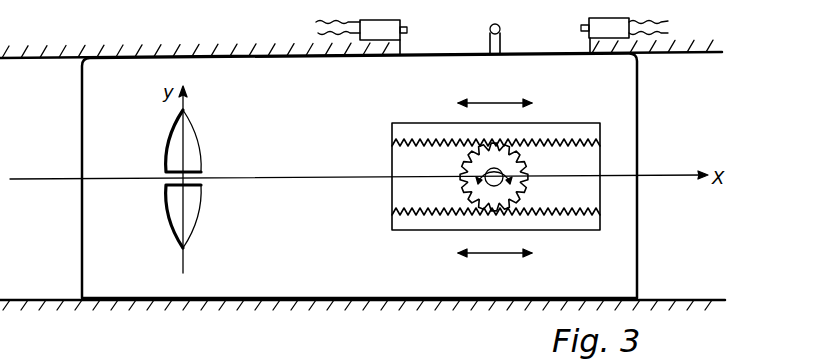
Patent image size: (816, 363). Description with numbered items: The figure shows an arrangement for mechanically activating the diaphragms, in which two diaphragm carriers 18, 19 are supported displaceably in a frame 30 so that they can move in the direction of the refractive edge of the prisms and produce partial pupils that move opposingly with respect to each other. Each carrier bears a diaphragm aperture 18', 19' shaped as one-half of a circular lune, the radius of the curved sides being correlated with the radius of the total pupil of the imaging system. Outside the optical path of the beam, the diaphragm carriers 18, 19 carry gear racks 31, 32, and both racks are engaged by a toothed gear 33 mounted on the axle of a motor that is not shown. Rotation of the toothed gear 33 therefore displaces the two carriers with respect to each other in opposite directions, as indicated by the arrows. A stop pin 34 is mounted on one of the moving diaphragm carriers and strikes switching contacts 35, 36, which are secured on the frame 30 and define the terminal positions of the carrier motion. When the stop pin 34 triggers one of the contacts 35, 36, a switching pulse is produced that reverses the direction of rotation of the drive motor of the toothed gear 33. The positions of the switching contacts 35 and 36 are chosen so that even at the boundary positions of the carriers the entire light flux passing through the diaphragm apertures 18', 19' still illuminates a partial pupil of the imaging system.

The diaphragm carrier 18 is at (115, 127).
The diaphragm aperture 18' is at (115, 141).
The diaphragm carrier 19 is at (115, 233).
The diaphragm aperture 19' is at (115, 216).
The frame 30 is at (697, 54).
The gear rack 31 is at (588, 131).
The gear rack 32 is at (588, 218).
The toothed gear 33 is at (510, 186).
The stop pin 34 is at (496, 24).
The switching contact 35 is at (407, 30).
The switching contact 36 is at (581, 28).